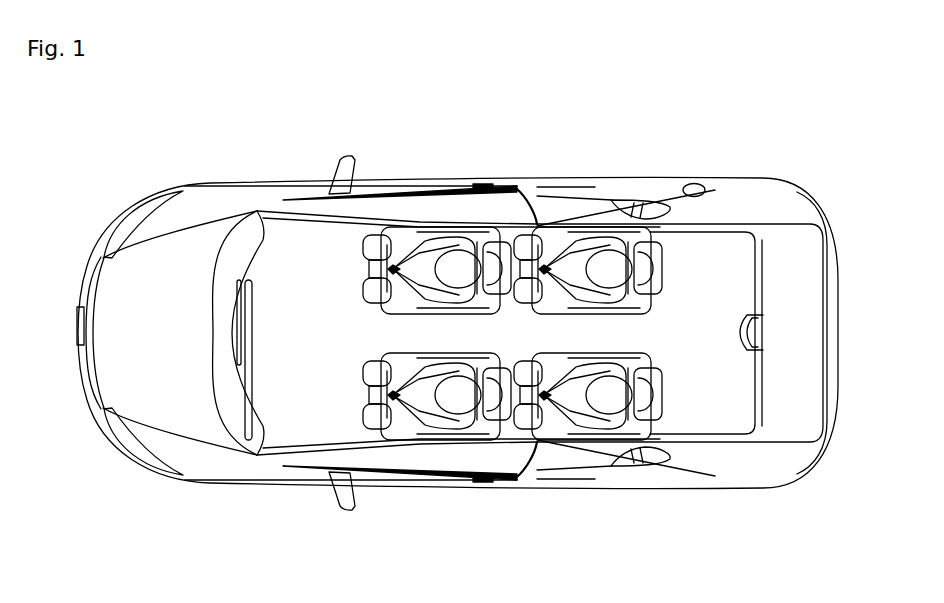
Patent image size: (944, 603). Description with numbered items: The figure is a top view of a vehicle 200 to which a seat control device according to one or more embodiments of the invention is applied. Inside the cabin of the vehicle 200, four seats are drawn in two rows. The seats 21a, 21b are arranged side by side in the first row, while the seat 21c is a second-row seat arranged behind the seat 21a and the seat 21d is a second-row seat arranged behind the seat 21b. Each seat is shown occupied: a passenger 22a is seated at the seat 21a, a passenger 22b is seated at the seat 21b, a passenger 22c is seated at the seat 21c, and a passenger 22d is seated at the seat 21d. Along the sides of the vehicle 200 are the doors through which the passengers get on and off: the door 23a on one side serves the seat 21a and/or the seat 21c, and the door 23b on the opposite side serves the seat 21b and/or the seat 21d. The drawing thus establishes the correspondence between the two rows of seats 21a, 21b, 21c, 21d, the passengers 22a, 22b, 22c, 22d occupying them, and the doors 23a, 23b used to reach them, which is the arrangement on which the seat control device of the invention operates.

The vehicle 200 is at (716, 504).
The seat 21a is at (367, 272).
The seat 21b is at (367, 398).
The seat 21c is at (663, 268).
The seat 21d is at (663, 394).
The passenger 22a is at (457, 268).
The passenger 22b is at (460, 397).
The passenger 22c is at (609, 268).
The passenger 22d is at (610, 397).
The door 23a is at (390, 183).
The door 23b is at (392, 480).